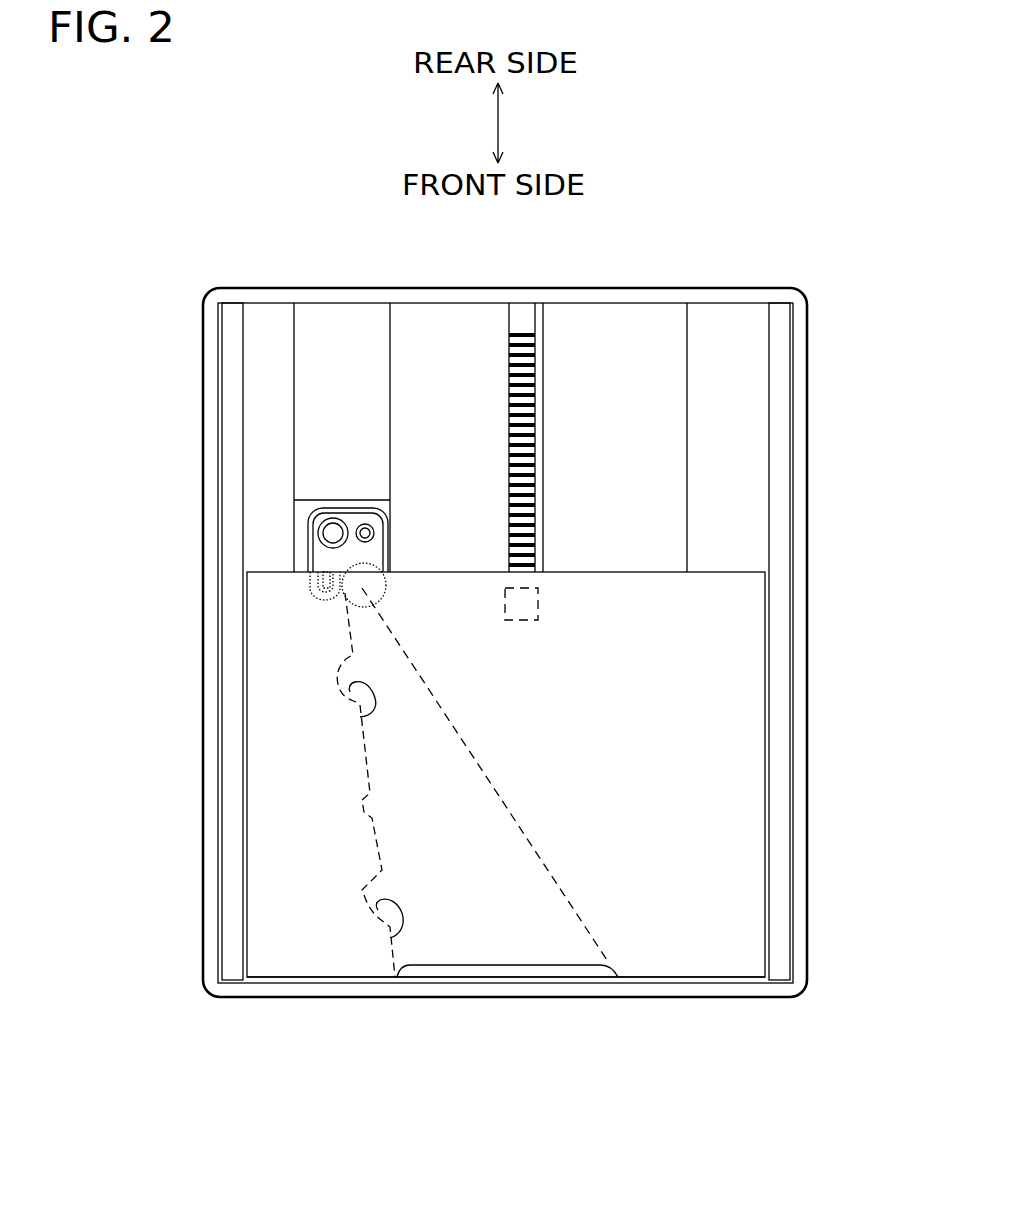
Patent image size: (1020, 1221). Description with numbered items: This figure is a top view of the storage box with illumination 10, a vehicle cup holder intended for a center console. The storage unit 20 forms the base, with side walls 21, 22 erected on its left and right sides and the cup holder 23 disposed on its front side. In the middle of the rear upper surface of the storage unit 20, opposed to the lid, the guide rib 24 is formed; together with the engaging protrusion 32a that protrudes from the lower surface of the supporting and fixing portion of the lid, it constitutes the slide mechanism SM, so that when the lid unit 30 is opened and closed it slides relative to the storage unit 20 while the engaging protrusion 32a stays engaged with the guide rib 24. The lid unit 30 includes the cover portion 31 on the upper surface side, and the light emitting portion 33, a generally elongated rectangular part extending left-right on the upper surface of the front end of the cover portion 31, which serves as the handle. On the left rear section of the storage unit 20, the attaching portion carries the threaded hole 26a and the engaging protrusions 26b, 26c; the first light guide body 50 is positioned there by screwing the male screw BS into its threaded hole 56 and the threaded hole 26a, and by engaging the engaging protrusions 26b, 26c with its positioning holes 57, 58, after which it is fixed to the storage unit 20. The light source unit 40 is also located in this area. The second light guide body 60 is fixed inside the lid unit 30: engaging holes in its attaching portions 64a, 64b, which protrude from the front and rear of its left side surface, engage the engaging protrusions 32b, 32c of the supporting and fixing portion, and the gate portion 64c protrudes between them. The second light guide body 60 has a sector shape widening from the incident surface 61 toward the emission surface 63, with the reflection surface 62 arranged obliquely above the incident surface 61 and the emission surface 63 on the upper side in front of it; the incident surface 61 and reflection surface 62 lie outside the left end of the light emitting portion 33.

The storage box with illumination 10 is at (841, 199).
The storage unit 20 is at (705, 287).
The side wall 21 is at (227, 717).
The side wall 22 is at (783, 727).
The cup holder 23 is at (735, 850).
The guide rib 24 is at (528, 487).
The male screw BS is at (192, 528).
The threaded hole 26a is at (192, 528).
The engaging protrusion 26b is at (424, 494).
The engaging protrusion 26c is at (211, 597).
The lid unit 30 is at (506, 1020).
The cover portion 31 is at (713, 976).
The engaging protrusion 32a is at (538, 600).
The engaging protrusion 32b is at (360, 717).
The engaging protrusion 32c is at (390, 938).
The light emitting portion 33 is at (505, 975).
The light source unit 40 is at (405, 558).
The first light guide body 50 is at (334, 517).
The threaded hole 56 is at (323, 531).
The positioning hole 57 is at (313, 583).
The positioning hole 58 is at (372, 526).
The second light guide body 60 is at (513, 811).
The incident surface 61 is at (444, 622).
The reflection surface 62 is at (359, 607).
The emission surface 63 is at (582, 955).
The attaching portion 64a is at (336, 785).
The attaching portion 64b is at (336, 785).
The gate portion 64c is at (333, 688).
The slide mechanism SM is at (627, 475).